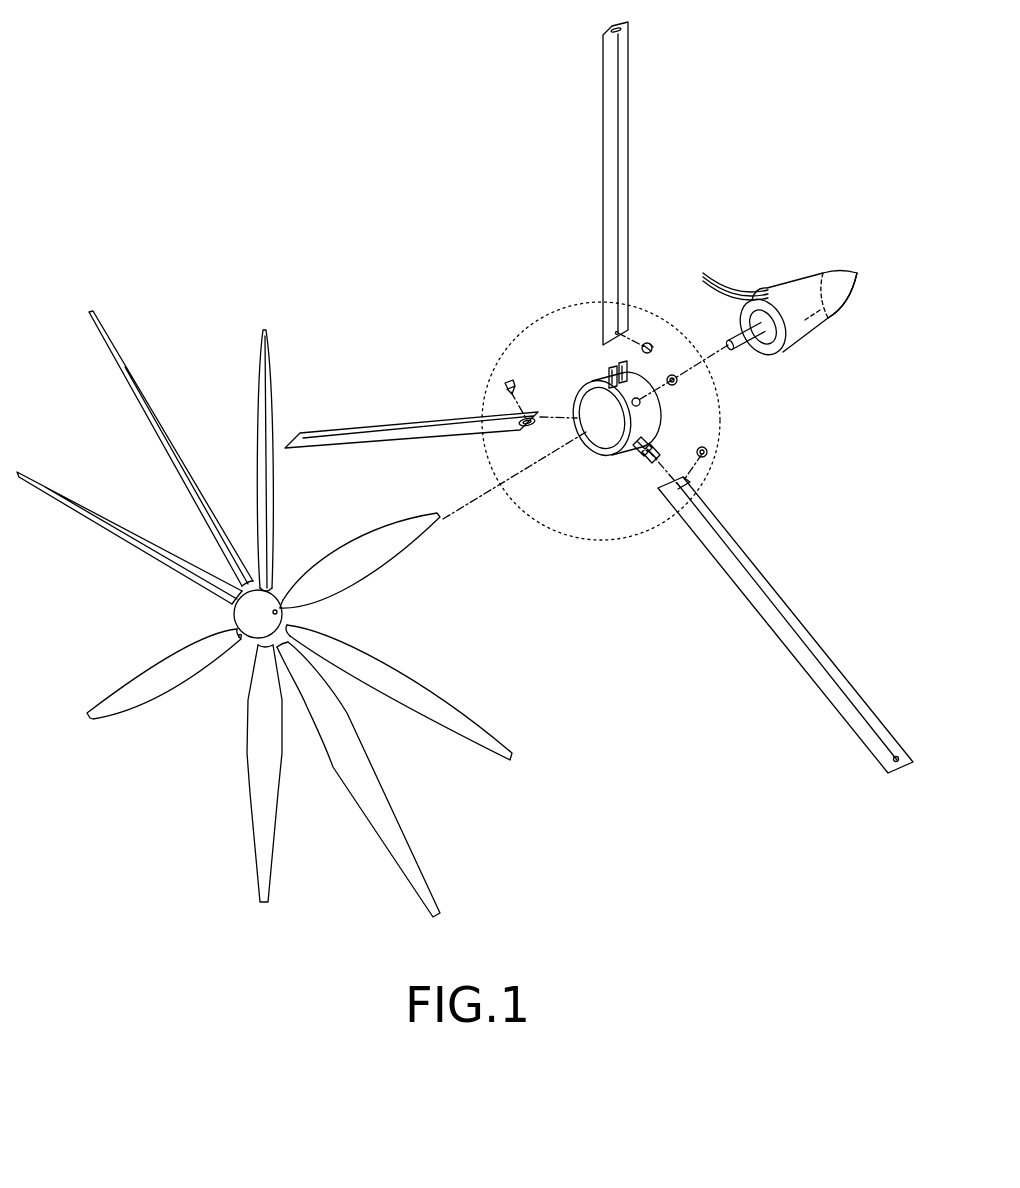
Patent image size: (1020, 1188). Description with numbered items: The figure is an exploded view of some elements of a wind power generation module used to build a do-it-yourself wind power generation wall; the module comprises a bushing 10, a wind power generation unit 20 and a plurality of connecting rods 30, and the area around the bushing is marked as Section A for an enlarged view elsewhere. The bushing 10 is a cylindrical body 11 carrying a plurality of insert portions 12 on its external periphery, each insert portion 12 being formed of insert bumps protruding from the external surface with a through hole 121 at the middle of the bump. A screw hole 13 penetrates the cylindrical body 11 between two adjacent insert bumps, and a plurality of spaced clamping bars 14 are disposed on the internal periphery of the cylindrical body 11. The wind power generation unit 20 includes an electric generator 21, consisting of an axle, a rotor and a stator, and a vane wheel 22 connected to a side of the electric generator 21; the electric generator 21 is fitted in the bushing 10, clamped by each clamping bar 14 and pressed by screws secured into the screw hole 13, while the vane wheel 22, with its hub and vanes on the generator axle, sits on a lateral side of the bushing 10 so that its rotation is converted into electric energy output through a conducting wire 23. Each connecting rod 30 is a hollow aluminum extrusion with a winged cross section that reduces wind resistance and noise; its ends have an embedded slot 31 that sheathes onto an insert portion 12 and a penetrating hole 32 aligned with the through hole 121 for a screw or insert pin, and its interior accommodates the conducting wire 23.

The bushing 10 is at (598, 460).
The cylindrical body 11 is at (563, 400).
The insert portion 12 is at (628, 455).
The through hole 121 is at (666, 443).
The screw hole 13 is at (652, 378).
The clamping bar 14 is at (603, 420).
The wind power generation unit 20 is at (797, 258).
The electric generator 21 is at (823, 333).
The vane wheel 22 is at (253, 782).
The conducting wire 23 is at (731, 291).
The connecting rod 30 is at (627, 155).
The embedded slot 31 is at (527, 422).
The penetrating hole 32 is at (681, 483).
The Section A is at (720, 421).